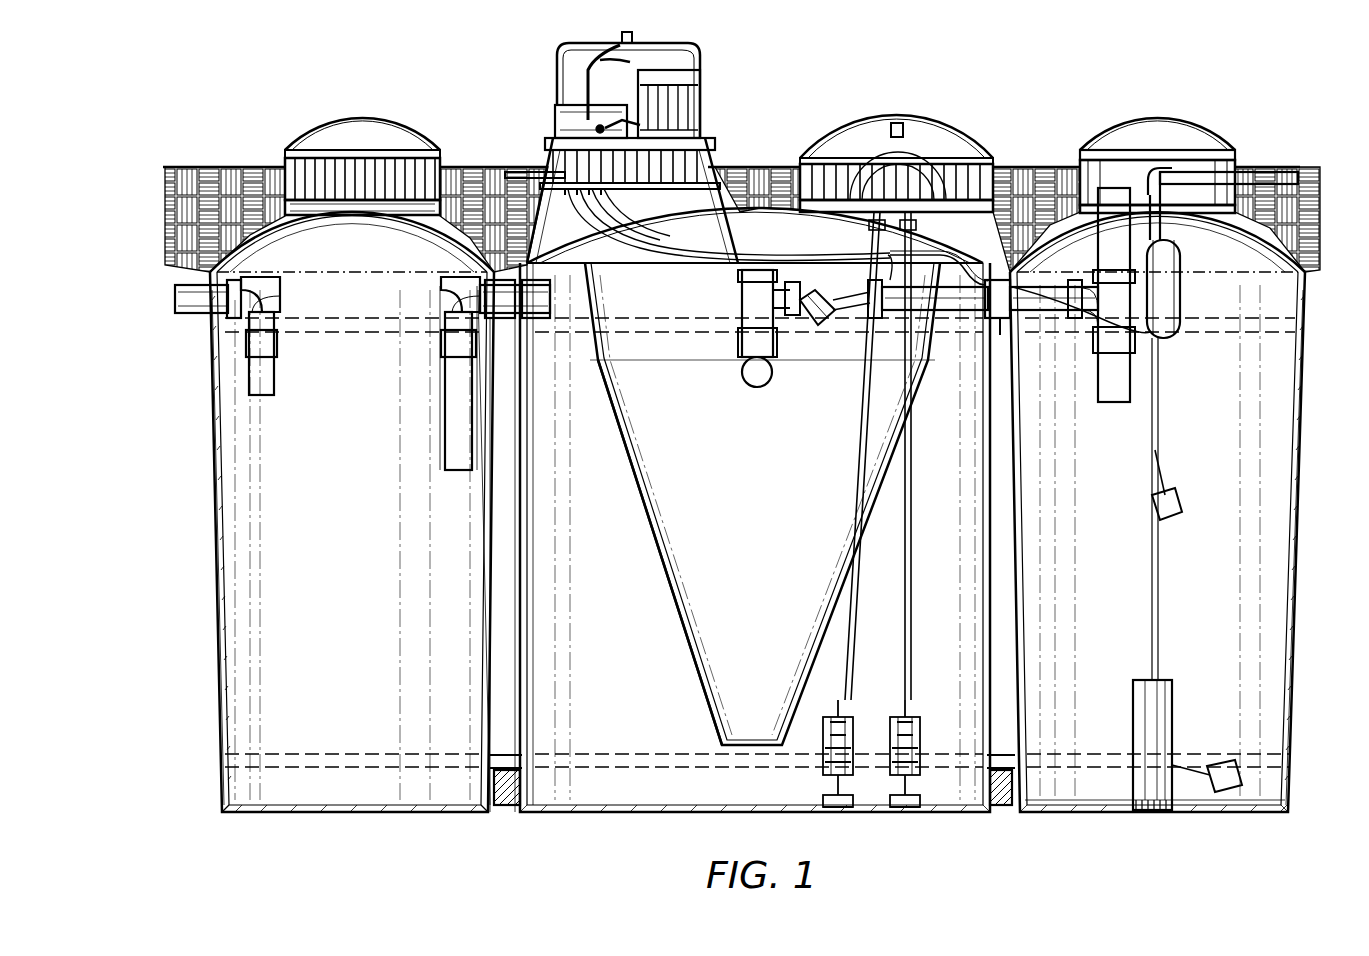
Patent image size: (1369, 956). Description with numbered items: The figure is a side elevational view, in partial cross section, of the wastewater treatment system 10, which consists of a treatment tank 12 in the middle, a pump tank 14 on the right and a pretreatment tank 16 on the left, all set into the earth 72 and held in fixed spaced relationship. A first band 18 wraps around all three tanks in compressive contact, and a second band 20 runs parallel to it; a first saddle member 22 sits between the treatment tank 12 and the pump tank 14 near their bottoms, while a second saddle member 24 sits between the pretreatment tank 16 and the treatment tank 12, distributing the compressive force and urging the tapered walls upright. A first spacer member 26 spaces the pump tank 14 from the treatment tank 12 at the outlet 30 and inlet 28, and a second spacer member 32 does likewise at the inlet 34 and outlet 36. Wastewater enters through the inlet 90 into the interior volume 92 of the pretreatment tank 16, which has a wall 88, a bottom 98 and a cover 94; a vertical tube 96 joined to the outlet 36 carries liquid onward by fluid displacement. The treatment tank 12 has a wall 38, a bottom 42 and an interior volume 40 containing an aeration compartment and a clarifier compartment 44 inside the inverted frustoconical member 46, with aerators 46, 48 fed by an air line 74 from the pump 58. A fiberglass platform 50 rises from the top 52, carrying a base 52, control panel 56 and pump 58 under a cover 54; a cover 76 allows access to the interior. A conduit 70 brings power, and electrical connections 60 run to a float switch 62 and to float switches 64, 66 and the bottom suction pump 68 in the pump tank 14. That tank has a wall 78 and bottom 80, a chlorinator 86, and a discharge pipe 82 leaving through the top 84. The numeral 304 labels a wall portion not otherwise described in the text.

The wastewater treatment system 10 is at (1072, 107).
The treatment tank 12 is at (698, 806).
The pump tank 14 is at (1100, 808).
The pretreatment tank 16 is at (300, 806).
The first band 18 is at (330, 752).
The second band 20 is at (388, 332).
The first saddle member 22 is at (1003, 810).
The second saddle member 24 is at (508, 810).
The first spacer member 26 is at (988, 250).
The inlet of the pump tank 28 is at (1022, 318).
The outlet of the treatment tank 30 is at (982, 335).
The second spacer member 32 is at (525, 355).
The inlet of the treatment tank 34 is at (535, 320).
The outlet of the pretreatment tank 36 is at (490, 275).
The wall of the treatment tank 38 is at (540, 690).
The interior volume of the treatment tank 40 is at (594, 530).
The bottom of the treatment tank 42 is at (870, 812).
The clarifier compartment 44 is at (762, 504).
The inverted frustoconical member / aerator 46 is at (665, 597).
The aerator 48 is at (912, 595).
The fiberglass platform 50 is at (712, 175).
The top of the treatment tank / base 52 is at (712, 148).
The cover 54 is at (690, 45).
The control panel 56 is at (557, 100).
The pump 58 is at (690, 75).
The electrical connections 60 is at (632, 222).
The float switch 62 is at (825, 325).
The float switch 64 is at (1183, 510).
The float switch 66 is at (1235, 760).
The bottom suction pump 68 is at (1165, 690).
The conduit 70 is at (528, 170).
The earth 72 is at (232, 165).
The air line 74 is at (705, 118).
The cover 76 is at (915, 140).
The wall of the pump tank 78 is at (1298, 525).
The bottom of the pump tank 80 is at (1235, 812).
The discharge pipe 82 is at (1275, 172).
The top of the pump tank 84 is at (1185, 132).
The chlorinator 86 is at (1100, 240).
The wall of the pretreatment tank 88 is at (230, 645).
The inlet of the pretreatment tank 90 is at (195, 285).
The interior volume of the pretreatment tank 92 is at (364, 530).
The cover 94 is at (345, 132).
The vertical tube 96 is at (440, 410).
The bottom of the pretreatment tank 98 is at (398, 810).
The tank wall 304 is at (545, 575).